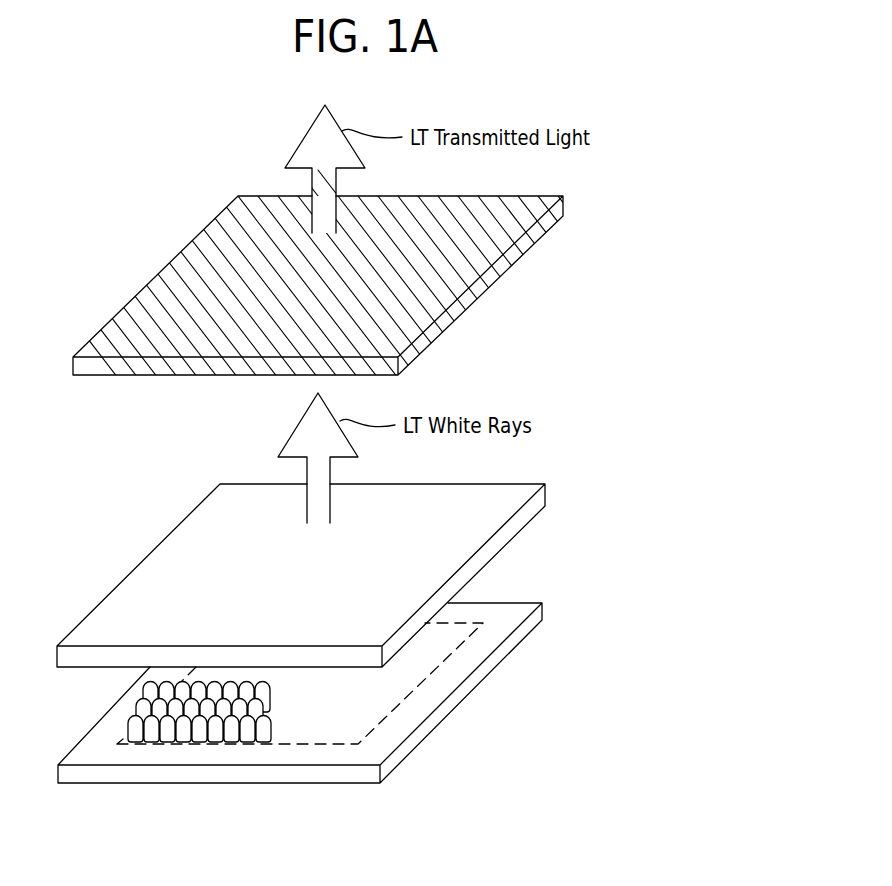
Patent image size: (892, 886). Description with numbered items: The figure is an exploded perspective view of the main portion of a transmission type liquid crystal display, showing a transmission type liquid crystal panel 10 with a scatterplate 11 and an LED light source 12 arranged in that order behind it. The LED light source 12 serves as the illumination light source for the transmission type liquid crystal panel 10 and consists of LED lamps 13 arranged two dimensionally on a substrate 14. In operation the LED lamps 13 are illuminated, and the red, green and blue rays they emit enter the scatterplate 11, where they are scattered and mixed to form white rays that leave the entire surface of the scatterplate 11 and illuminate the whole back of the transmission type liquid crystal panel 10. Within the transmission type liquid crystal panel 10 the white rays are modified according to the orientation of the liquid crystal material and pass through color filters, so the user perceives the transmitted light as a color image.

The transmission type liquid crystal panel 10 is at (450, 320).
The scatterplate 11 is at (543, 498).
The LED light source 12 is at (333, 735).
The LED lamps 13 is at (194, 761).
The substrate 14 is at (423, 735).